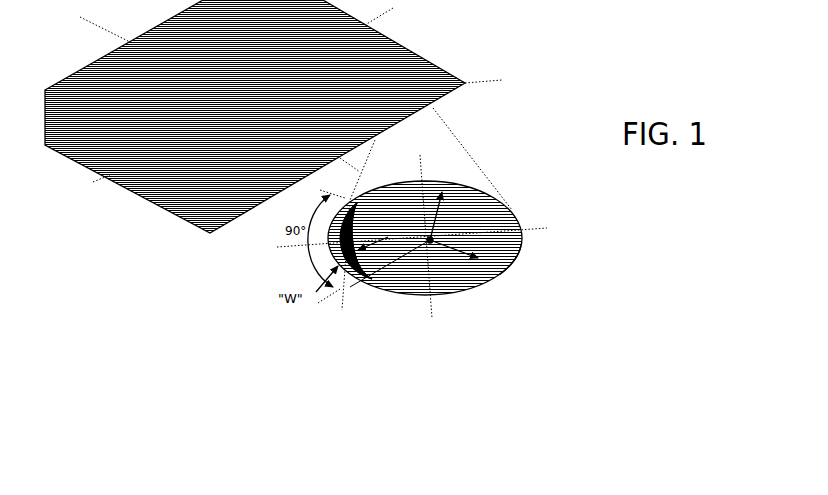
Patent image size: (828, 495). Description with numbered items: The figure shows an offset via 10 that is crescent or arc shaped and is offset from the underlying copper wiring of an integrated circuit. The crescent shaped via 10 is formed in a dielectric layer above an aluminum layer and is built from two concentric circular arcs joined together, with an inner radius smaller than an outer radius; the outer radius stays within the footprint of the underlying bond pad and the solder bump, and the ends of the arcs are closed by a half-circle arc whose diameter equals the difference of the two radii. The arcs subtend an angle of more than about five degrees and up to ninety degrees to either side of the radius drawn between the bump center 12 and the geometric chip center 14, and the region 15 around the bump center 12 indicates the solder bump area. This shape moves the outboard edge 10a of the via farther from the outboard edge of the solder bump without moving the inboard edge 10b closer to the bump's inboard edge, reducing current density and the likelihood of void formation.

The geometric chip center 14 is at (222, 103).
The bump center 12 is at (434, 244).
The disk surface 15 is at (497, 255).
The crescent shaped via 10 is at (362, 277).
The outboard edge 10a is at (341, 265).
The inboard edge 10b is at (372, 267).